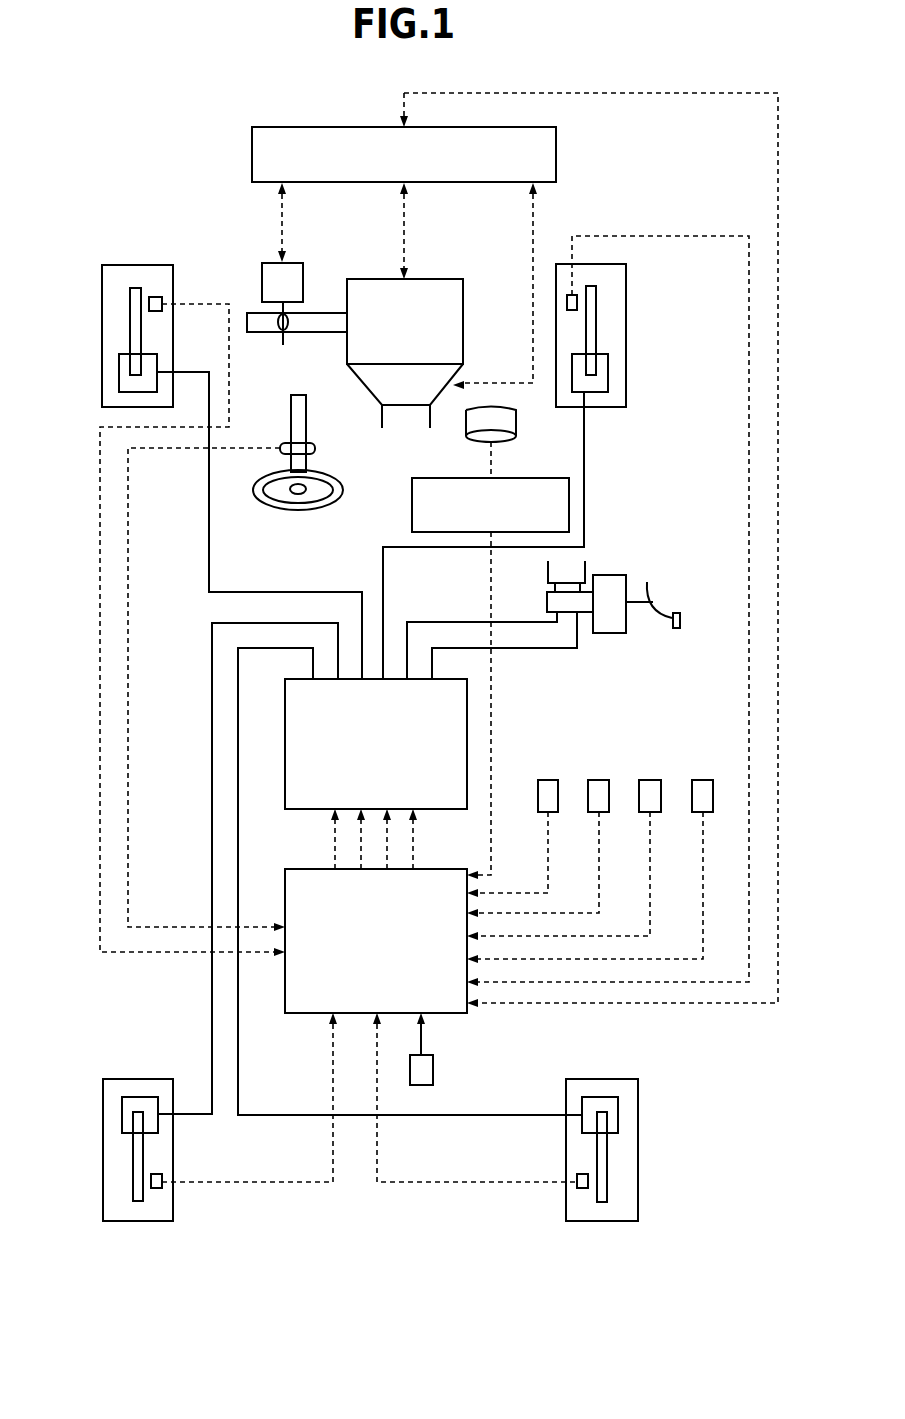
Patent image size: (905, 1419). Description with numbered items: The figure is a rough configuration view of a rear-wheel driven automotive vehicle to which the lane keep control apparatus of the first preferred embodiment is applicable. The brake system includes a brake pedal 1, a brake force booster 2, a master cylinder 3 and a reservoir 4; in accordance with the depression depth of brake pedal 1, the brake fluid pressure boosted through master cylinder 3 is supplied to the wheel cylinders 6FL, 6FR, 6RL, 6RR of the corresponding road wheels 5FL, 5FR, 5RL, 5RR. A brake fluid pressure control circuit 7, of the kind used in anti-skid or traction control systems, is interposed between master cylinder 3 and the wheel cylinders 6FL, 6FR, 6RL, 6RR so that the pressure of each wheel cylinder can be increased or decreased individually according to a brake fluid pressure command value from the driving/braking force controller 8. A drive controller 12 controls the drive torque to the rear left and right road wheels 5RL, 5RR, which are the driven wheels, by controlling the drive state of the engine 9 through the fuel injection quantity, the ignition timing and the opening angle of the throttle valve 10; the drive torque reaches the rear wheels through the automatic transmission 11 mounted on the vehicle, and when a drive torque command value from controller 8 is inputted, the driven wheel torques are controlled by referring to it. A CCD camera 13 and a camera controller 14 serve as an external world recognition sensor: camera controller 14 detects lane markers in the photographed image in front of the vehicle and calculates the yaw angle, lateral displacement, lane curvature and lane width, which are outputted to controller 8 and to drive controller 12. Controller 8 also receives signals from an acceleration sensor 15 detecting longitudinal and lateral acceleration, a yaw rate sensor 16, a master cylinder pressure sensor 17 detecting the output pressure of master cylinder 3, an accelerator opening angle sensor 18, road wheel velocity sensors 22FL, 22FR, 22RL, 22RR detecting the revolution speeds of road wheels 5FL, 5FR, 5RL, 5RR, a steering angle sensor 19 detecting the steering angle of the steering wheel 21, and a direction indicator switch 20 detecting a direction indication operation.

The brake pedal 1 is at (682, 620).
The brake force booster 2 is at (610, 635).
The master cylinder 3 is at (547, 601).
The reservoir 4 is at (586, 571).
The front left road wheel 5FL is at (173, 276).
The front right road wheel 5FR is at (627, 290).
The rear left road wheel 5RL is at (139, 1078).
The rear right road wheel 5RR is at (603, 1078).
The front left wheel cylinder 6FL is at (119, 375).
The front right wheel cylinder 6FR is at (608, 378).
The rear left wheel cylinder 6RL is at (122, 1115).
The rear right wheel cylinder 6RR is at (618, 1112).
The brake fluid pressure control circuit 7 is at (300, 811).
The driving/braking force controller 8 is at (430, 868).
The engine 9 is at (441, 279).
The throttle valve 10 is at (365, 392).
The automatic transmission 11 is at (270, 342).
The drive controller 12 is at (557, 157).
The CCD camera 13 is at (517, 425).
The camera controller 14 is at (412, 508).
The acceleration sensor 15 is at (548, 780).
The yaw rate sensor 16 is at (599, 780).
The master cylinder pressure sensor 17 is at (650, 780).
The accelerator opening angle sensor 18 is at (703, 780).
The steering angle sensor 19 is at (318, 449).
The direction indicator switch 20 is at (434, 1068).
The steering wheel 21 is at (304, 512).
The front left road wheel velocity sensor 22FL is at (155, 297).
The front right road wheel velocity sensor 22FR is at (567, 303).
The rear left road wheel velocity sensor 22RL is at (157, 1190).
The rear right road wheel velocity sensor 22RR is at (583, 1190).